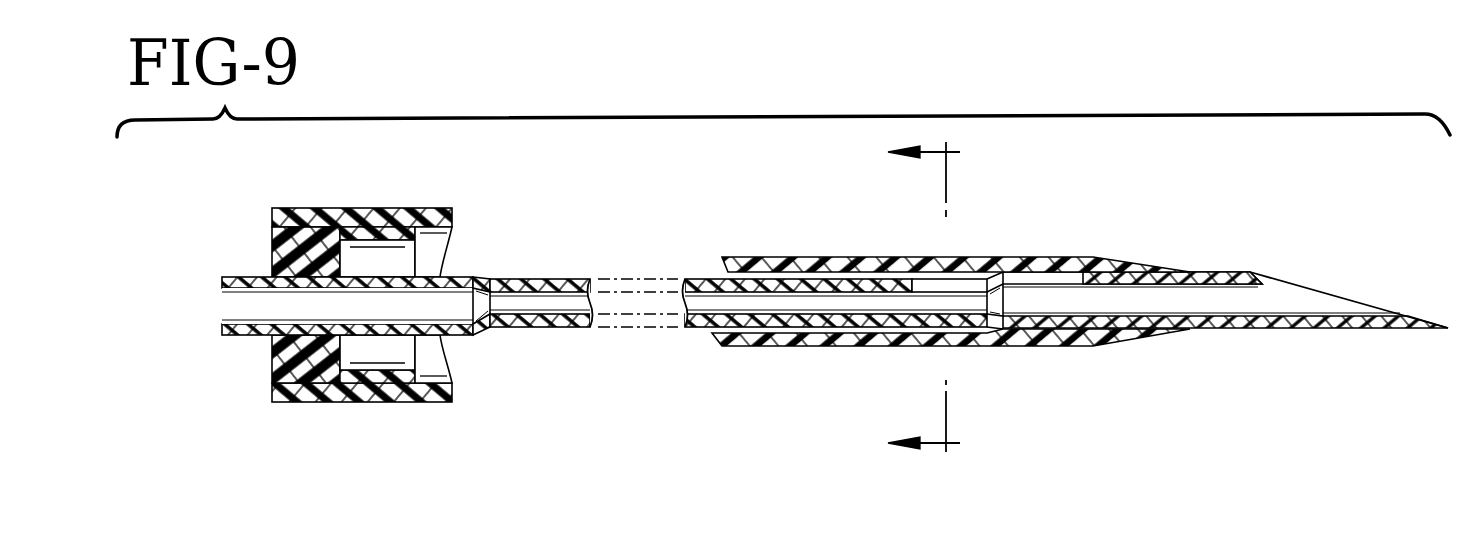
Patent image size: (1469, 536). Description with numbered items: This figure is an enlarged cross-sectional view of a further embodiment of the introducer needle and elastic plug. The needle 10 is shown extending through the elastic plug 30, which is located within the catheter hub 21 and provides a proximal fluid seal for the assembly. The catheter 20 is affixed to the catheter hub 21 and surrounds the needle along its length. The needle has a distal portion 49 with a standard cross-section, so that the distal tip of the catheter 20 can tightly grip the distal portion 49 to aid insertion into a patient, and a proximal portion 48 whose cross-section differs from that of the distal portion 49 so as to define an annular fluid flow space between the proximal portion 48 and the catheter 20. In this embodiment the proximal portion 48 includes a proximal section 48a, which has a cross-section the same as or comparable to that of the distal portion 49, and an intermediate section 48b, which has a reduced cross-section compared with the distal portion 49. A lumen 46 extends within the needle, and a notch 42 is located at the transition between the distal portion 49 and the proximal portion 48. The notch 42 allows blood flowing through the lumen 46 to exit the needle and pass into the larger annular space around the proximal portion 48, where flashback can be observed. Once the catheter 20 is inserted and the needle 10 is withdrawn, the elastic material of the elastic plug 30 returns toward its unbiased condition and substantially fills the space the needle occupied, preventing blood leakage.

The needle 10 is at (946, 299).
The catheter 20 is at (820, 346).
The catheter hub 21 is at (371, 208).
The elastic plug 30 is at (282, 250).
The notch 42 is at (967, 289).
The lumen 46 is at (232, 305).
The proximal portion 48 is at (686, 281).
The proximal section 48a is at (457, 277).
The intermediate section 48b is at (686, 326).
The distal portion 49 is at (1222, 271).